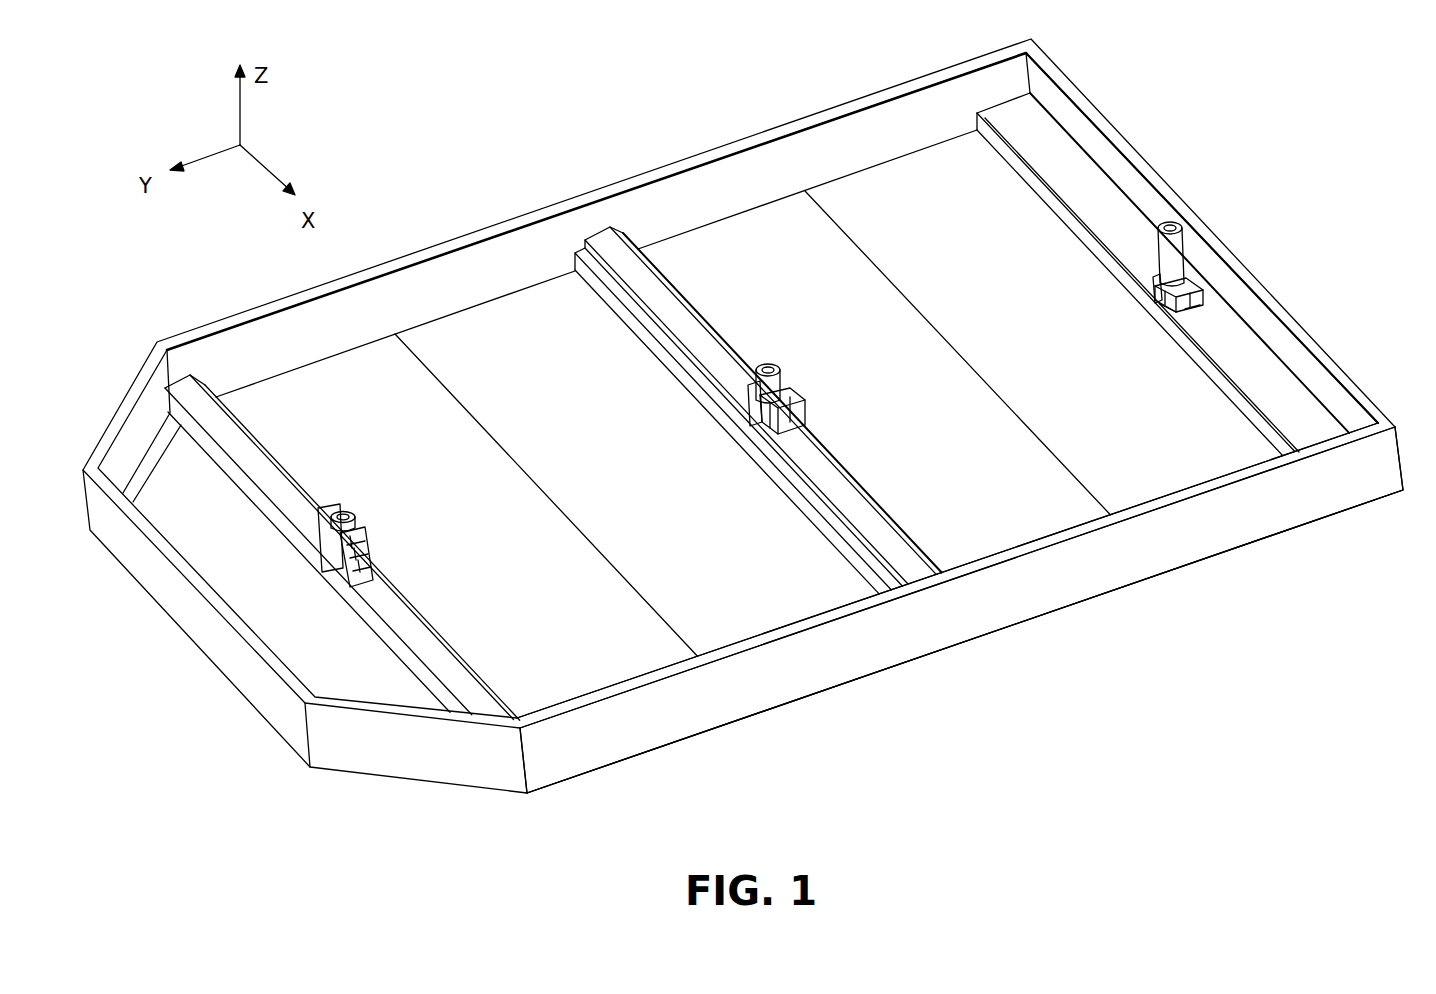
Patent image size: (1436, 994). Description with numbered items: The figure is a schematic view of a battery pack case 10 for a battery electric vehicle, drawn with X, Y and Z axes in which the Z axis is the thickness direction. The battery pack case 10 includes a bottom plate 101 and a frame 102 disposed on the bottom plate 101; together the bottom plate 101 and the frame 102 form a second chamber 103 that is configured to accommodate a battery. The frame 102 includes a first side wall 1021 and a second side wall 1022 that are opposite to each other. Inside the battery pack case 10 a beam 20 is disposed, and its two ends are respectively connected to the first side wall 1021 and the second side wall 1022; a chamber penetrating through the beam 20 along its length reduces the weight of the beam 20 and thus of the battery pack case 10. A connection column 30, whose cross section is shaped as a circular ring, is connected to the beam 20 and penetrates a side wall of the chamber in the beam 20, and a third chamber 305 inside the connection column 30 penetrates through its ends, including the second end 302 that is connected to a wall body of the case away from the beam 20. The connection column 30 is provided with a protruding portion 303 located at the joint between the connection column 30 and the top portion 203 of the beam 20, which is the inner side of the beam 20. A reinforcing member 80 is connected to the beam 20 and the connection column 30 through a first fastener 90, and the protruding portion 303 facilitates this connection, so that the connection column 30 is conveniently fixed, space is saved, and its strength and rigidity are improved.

The battery pack case 10 is at (130, 405).
The bottom plate 101 is at (925, 180).
The frame 102 is at (1135, 550).
The first side wall 1021 is at (525, 250).
The second side wall 1022 is at (948, 628).
The second chamber 103 is at (760, 240).
The beam 20 is at (1206, 274).
The top portion of the beam 203 is at (1268, 380).
The connection column 30 is at (1247, 206).
The second end of the connection column 302 is at (1180, 245).
The protruding portion 303 is at (1197, 270).
The third chamber 305 is at (1172, 222).
The reinforcing member 80 is at (1200, 285).
The first fastener 90 is at (1203, 298).